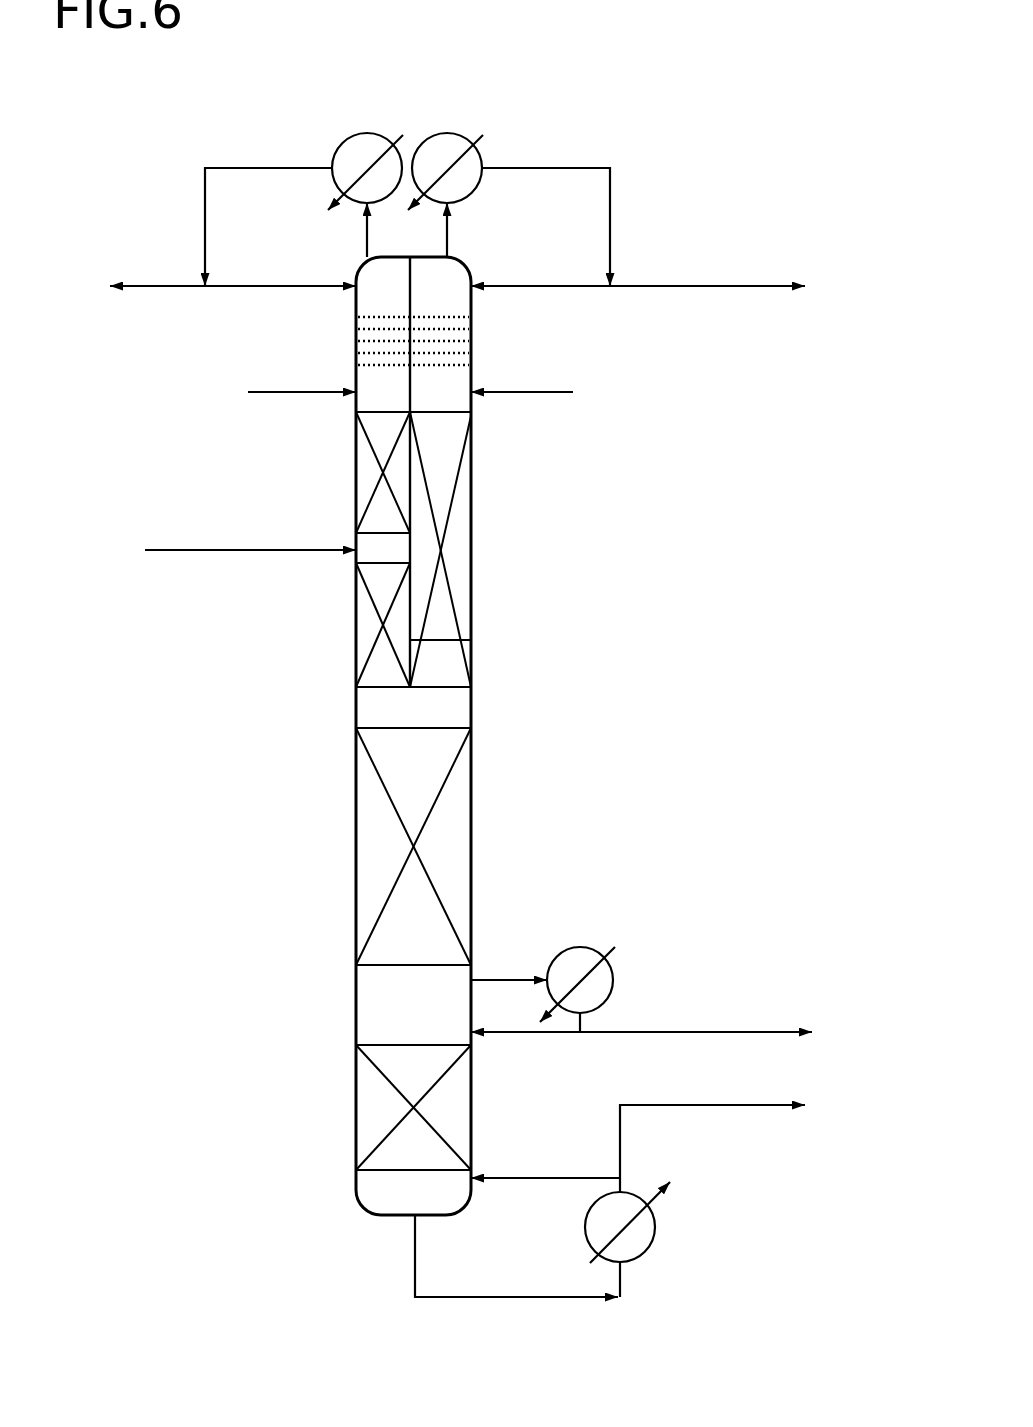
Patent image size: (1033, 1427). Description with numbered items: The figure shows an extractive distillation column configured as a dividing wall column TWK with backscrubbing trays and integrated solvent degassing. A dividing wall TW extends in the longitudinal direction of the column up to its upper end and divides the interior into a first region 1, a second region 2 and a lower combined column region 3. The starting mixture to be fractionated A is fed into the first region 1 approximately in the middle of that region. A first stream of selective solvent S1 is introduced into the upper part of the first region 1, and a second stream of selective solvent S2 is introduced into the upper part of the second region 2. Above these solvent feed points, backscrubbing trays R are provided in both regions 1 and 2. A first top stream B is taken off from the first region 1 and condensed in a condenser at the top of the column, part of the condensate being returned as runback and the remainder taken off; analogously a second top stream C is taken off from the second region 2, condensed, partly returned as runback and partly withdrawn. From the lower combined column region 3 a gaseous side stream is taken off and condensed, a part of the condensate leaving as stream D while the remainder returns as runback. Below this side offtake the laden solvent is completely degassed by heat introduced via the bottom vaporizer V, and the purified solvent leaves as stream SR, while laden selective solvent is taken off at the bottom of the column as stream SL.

The first region 1 is at (383, 543).
The second region 2 is at (440, 463).
The lower combined column region 3 is at (368, 835).
The backscrubbing trays R is at (372, 328).
The dividing wall column TWK is at (477, 584).
The dividing wall TW is at (453, 640).
The starting mixture to be fractionated A is at (250, 535).
The first top stream B is at (233, 228).
The second top stream C is at (638, 227).
The side stream condensate D is at (641, 989).
The first stream of selective solvent S1 is at (302, 380).
The second stream of selective solvent S2 is at (522, 378).
The purified solvent stream SR is at (638, 1136).
The laden selective solvent stream SL is at (516, 1256).
The bottom vaporizer V is at (640, 1245).